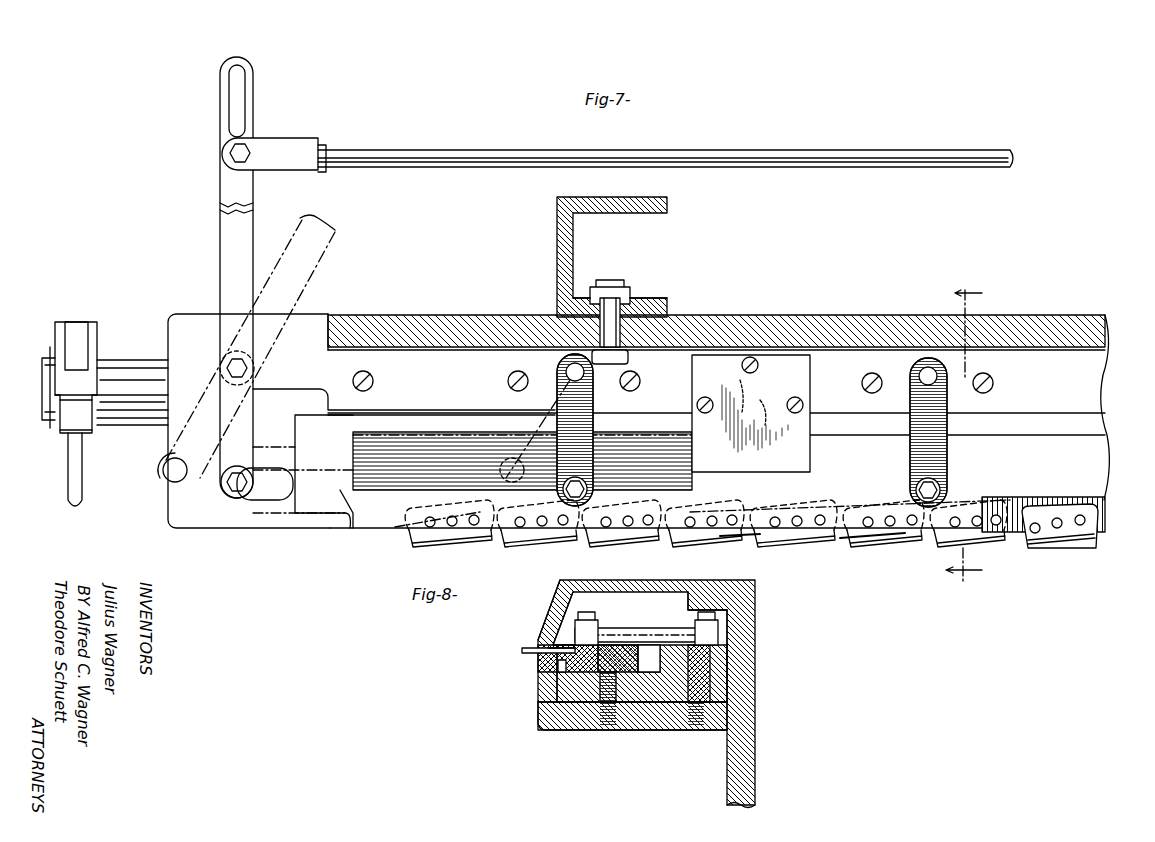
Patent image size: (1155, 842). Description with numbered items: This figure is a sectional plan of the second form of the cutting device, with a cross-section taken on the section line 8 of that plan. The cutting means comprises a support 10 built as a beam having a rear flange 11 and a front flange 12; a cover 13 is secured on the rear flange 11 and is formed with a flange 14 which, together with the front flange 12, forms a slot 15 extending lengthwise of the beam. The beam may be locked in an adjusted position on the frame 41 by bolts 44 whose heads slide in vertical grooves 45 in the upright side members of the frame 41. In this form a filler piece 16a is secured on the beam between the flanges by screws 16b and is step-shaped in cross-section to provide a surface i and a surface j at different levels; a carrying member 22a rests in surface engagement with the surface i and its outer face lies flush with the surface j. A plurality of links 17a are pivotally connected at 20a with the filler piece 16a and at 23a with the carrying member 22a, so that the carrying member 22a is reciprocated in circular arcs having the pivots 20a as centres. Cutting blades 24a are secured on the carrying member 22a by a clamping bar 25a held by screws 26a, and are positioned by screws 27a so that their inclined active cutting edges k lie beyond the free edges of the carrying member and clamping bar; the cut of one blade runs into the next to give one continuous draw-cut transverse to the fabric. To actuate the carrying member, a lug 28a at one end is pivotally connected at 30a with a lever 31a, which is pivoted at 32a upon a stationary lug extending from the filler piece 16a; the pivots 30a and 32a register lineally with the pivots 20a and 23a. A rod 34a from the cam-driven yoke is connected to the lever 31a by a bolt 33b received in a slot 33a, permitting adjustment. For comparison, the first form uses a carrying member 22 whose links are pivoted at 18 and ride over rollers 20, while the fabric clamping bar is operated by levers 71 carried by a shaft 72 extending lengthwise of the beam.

In FIG. 7, the lever 71 is at (52, 430).
In FIG. 7, the shaft 72 is at (134, 420).
In FIG. 7, the lever 31a is at (221, 269).
In FIG. 7, the slot 33a is at (245, 92).
In FIG. 7, the bolt 33b is at (229, 153).
In FIG. 7, the rod 34a is at (530, 150).
In FIG. 7, the pivot 32a is at (222, 368).
In FIG. 7, the pivot 30a is at (233, 494).
In FIG. 7, the lug 28a is at (278, 500).
In FIG. 7, the support 10 is at (810, 318).
In FIG. 8, the support 10 is at (668, 732).
In FIG. 7, the frame 41 is at (563, 262).
In FIG. 7, the bolt 44 is at (614, 290).
In FIG. 7, the vertical groove 45 is at (640, 312).
In FIG. 7, the filler piece 16a is at (716, 403).
In FIG. 8, the filler piece 16a is at (712, 689).
In FIG. 7, the screw 16b is at (868, 392).
In FIG. 8, the screw 16b is at (700, 666).
In FIG. 7, the pivot 18 is at (1088, 473).
In FIG. 7, the link 17a is at (594, 430).
In FIG. 8, the link 17a is at (652, 636).
In FIG. 7, the pivot 20a is at (580, 378).
In FIG. 7, the pivot 23a is at (575, 477).
In FIG. 8, the pivot 23a is at (590, 622).
In FIG. 7, the section line 8- 8 is at (964, 436).
In FIG. 7, the carrying member 22 is at (420, 522).
In FIG. 7, the cutting blade 24a is at (612, 540).
In FIG. 8, the cutting blade 24a is at (540, 651).
In FIG. 7, the screw 27a is at (412, 527).
In FIG. 7, the clamping bar 25a is at (842, 496).
In FIG. 8, the clamping bar 25a is at (560, 648).
In FIG. 7, the screw 26a is at (855, 526).
In FIG. 8, the screw 26a is at (562, 645).
In FIG. 7, the slot 15 is at (344, 530).
In FIG. 8, the slot 15 is at (545, 669).
In FIG. 7, the active cutting edge k is at (440, 532).
In FIG. 8, the cover 13 is at (592, 580).
In FIG. 8, the flange 14 is at (549, 603).
In FIG. 8, the rear flange 11 is at (748, 654).
In FIG. 8, the roller 20 is at (732, 636).
In FIG. 8, the surface i is at (646, 674).
In FIG. 8, the carrying member 22a is at (618, 645).
In FIG. 8, the front flange 12 is at (540, 702).
In FIG. 8, the surface j is at (702, 636).